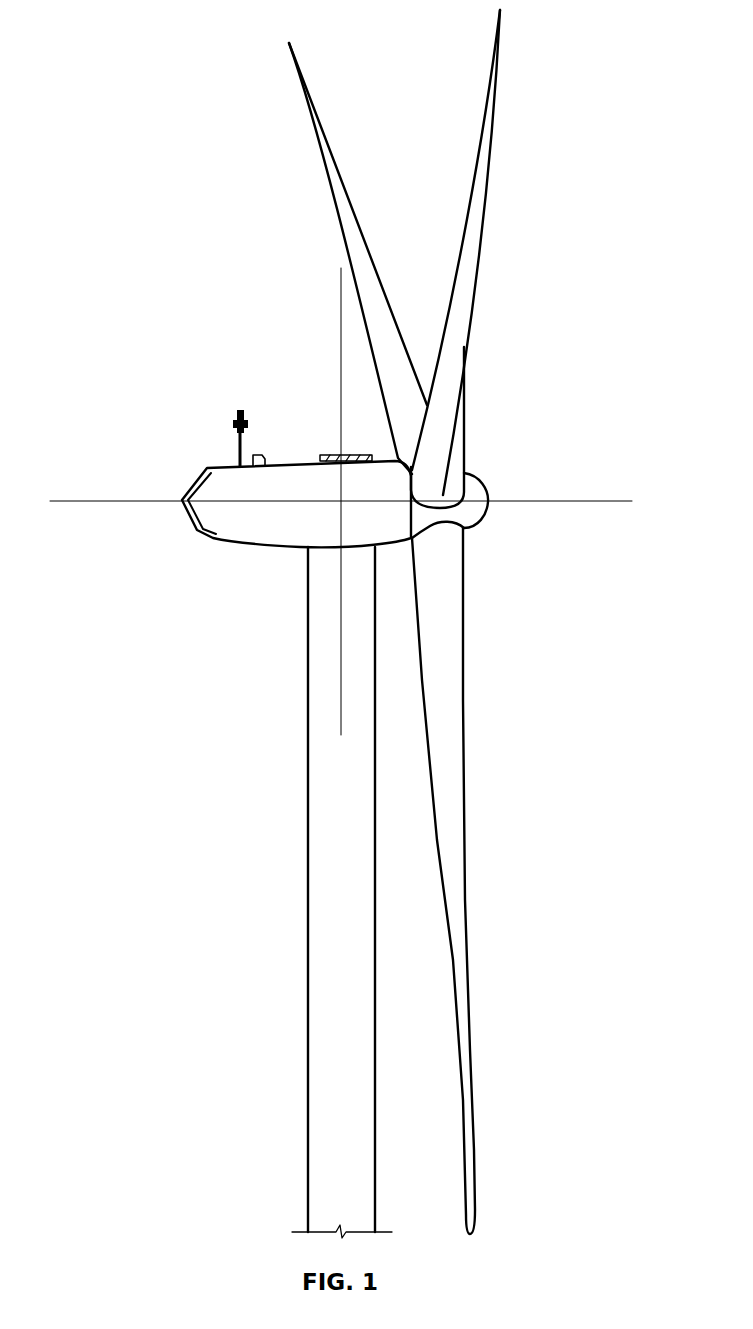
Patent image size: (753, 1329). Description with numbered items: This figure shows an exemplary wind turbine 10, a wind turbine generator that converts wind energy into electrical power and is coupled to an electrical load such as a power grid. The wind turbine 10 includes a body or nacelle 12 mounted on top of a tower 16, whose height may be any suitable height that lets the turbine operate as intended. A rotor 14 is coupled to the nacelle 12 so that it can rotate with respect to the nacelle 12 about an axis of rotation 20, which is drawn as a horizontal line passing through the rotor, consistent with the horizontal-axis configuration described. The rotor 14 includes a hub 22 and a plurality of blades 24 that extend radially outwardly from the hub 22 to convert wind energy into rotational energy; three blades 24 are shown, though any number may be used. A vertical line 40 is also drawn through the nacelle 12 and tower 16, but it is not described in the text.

The wind turbine 10 is at (112, 70).
The nacelle 12 is at (227, 546).
The rotor 14 is at (482, 555).
The tower 16 is at (308, 865).
The axis of rotation 20 is at (613, 503).
The hub 22 is at (488, 507).
The blades 24 is at (308, 83).
The yaw axis 40 is at (342, 322).